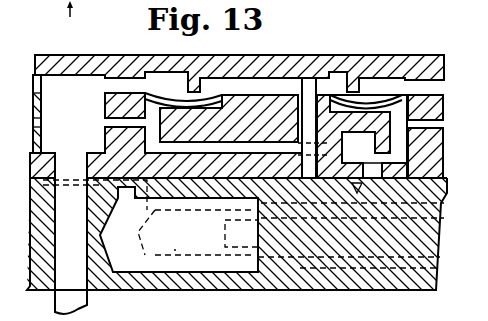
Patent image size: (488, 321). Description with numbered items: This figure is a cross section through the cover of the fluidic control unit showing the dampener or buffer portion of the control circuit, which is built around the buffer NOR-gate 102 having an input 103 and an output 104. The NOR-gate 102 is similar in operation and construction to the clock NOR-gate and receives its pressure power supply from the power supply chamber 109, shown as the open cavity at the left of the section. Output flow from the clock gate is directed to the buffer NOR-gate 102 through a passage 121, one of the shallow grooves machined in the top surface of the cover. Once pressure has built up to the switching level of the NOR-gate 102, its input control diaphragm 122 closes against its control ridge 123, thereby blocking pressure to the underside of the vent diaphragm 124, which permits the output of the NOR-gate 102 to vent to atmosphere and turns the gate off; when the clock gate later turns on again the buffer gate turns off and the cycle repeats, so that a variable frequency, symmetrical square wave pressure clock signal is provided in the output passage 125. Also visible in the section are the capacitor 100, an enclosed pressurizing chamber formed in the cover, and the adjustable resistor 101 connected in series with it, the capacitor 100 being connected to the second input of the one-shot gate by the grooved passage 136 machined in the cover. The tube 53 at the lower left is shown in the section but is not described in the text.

The inlet tube 53 is at (80, 309).
The capacitor 100 is at (136, 240).
The adjustable resistor 101 is at (275, 264).
The NOR-gate 102 is at (280, 63).
The input 103 is at (359, 184).
The output 104 is at (307, 132).
The power supply chamber 109 is at (86, 116).
The passage 121 is at (390, 188).
The input control diaphragm 122 is at (407, 156).
The control ridge 123 is at (390, 146).
The vent diaphragm 124 is at (400, 135).
The output passage 125 is at (437, 190).
The grooved passage 136 is at (136, 173).